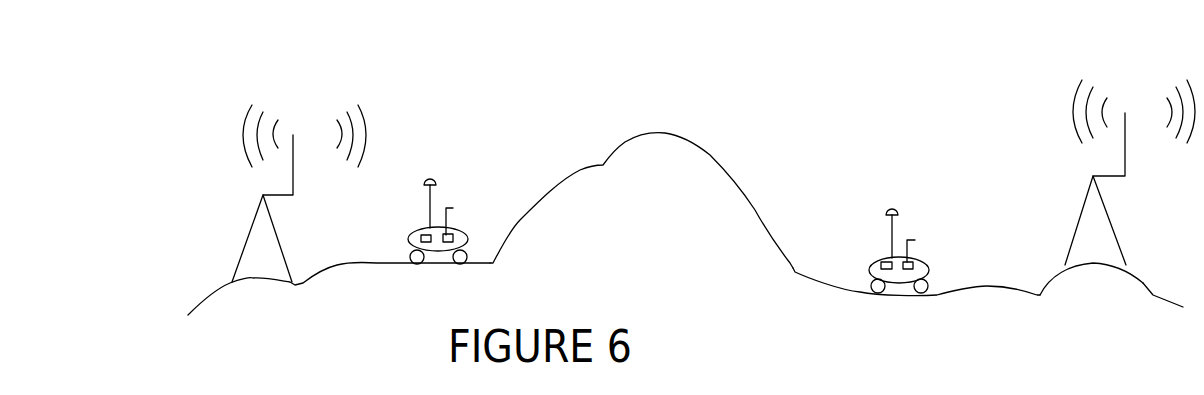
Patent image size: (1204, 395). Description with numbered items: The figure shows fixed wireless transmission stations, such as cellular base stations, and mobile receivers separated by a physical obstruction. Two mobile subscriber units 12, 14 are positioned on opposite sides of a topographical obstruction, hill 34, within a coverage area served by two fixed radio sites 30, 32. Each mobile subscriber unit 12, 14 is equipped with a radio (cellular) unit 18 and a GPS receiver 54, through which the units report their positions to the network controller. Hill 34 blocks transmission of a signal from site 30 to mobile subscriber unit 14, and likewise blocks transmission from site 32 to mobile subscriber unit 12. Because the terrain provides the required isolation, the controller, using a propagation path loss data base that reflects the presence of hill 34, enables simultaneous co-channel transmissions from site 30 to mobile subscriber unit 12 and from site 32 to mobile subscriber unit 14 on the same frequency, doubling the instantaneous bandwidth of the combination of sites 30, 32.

The mobile subscriber unit 12 is at (422, 228).
The mobile subscriber unit 14 is at (887, 260).
The radio (cellular) unit 18 is at (452, 230).
The radio site 30 is at (268, 310).
The radio site 32 is at (1096, 317).
The hill 34 is at (656, 235).
The GPS receiver 54 is at (428, 212).